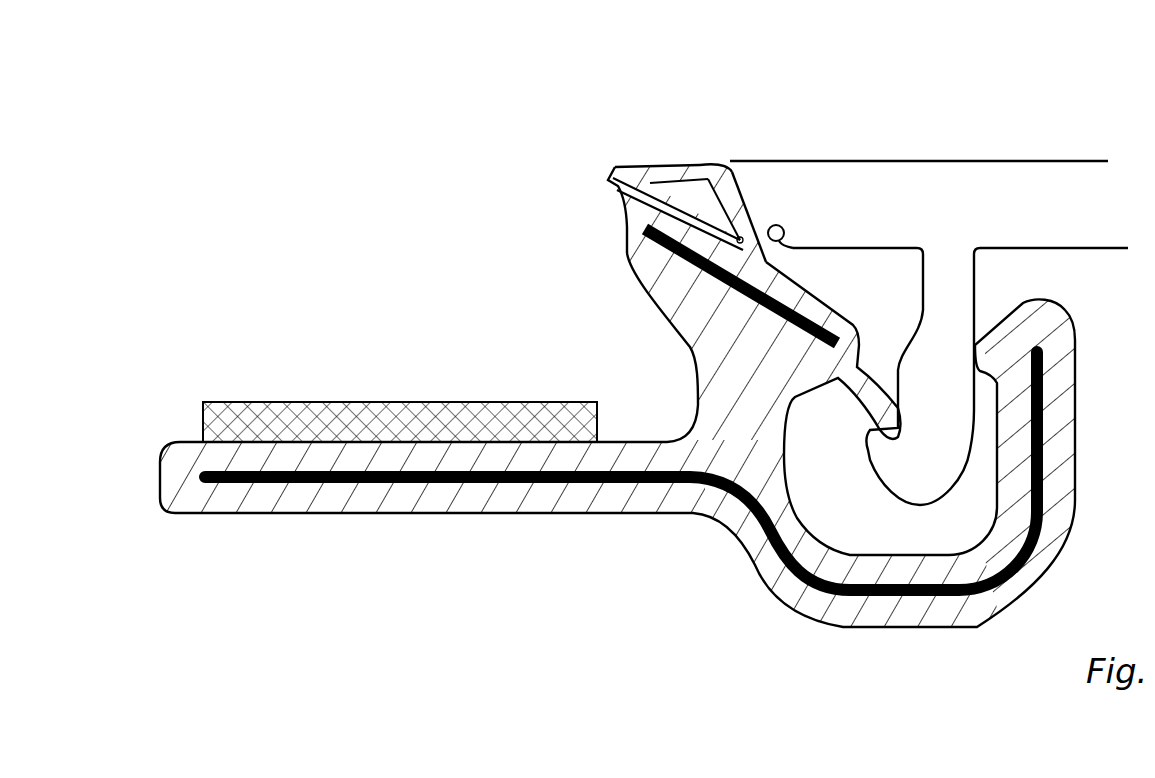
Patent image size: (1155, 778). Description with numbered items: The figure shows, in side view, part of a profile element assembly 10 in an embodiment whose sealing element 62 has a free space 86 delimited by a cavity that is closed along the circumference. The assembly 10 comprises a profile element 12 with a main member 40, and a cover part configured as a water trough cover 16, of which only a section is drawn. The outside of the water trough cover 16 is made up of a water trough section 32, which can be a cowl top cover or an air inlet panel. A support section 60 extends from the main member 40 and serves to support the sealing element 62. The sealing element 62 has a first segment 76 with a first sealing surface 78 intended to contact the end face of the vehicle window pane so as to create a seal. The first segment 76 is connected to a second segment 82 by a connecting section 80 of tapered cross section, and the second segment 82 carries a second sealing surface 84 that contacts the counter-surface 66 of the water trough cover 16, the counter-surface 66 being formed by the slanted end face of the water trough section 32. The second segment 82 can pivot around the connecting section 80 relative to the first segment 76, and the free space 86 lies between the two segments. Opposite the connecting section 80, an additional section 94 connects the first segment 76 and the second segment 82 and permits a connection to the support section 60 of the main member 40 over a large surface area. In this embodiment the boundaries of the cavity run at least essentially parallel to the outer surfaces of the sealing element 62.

The profile element assembly 10 is at (639, 366).
The profile element 12 is at (713, 560).
The water trough cover 16 is at (1022, 138).
The water trough section 32 is at (890, 197).
The main member 40 is at (733, 387).
The support section 60 is at (633, 231).
The sealing element 62 is at (677, 147).
The counter-surface 66 is at (780, 226).
The first segment 76 is at (630, 183).
The first sealing surface 78 is at (606, 180).
The connecting section 80 is at (693, 170).
The second segment 82 is at (703, 197).
The second sealing surface 84 is at (748, 192).
The free space 86 is at (715, 167).
The additional section 94 is at (687, 215).